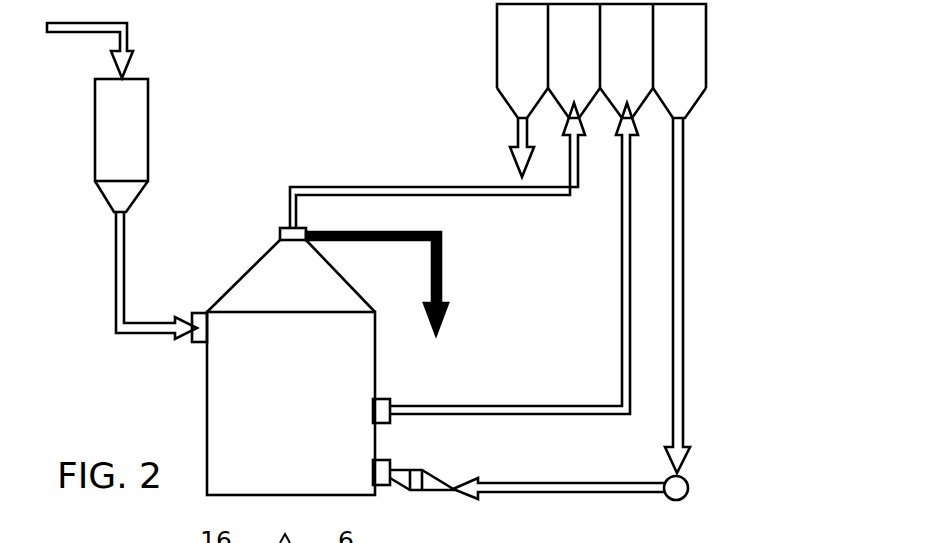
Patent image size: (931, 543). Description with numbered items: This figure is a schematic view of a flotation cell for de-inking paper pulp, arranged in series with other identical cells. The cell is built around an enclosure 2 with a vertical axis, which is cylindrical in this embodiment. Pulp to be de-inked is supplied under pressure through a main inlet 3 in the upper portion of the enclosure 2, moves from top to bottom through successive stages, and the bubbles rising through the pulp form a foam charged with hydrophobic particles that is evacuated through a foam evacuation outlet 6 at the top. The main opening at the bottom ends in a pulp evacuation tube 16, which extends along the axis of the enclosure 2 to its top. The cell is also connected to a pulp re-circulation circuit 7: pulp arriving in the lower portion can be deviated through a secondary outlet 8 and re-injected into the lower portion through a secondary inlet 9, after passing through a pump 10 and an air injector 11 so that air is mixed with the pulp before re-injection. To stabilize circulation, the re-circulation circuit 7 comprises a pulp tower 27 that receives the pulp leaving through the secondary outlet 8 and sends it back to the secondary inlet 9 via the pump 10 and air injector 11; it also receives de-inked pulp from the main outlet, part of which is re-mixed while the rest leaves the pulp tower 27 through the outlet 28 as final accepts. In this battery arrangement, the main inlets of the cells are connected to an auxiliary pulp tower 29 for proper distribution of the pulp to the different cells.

The enclosure 2 is at (245, 397).
The main inlet 3 is at (200, 317).
The foam evacuation outlet 6 is at (310, 229).
The pulp re-circulation circuit 7 is at (558, 398).
The secondary outlet 8 is at (382, 400).
The secondary inlet 9 is at (378, 486).
The pump 10 is at (676, 494).
The air injector 11 is at (428, 483).
The pulp evacuation tube 16 is at (282, 231).
The pulp tower 27 is at (486, 50).
The outlet 28 is at (517, 122).
The auxiliary pulp tower 29 is at (105, 133).